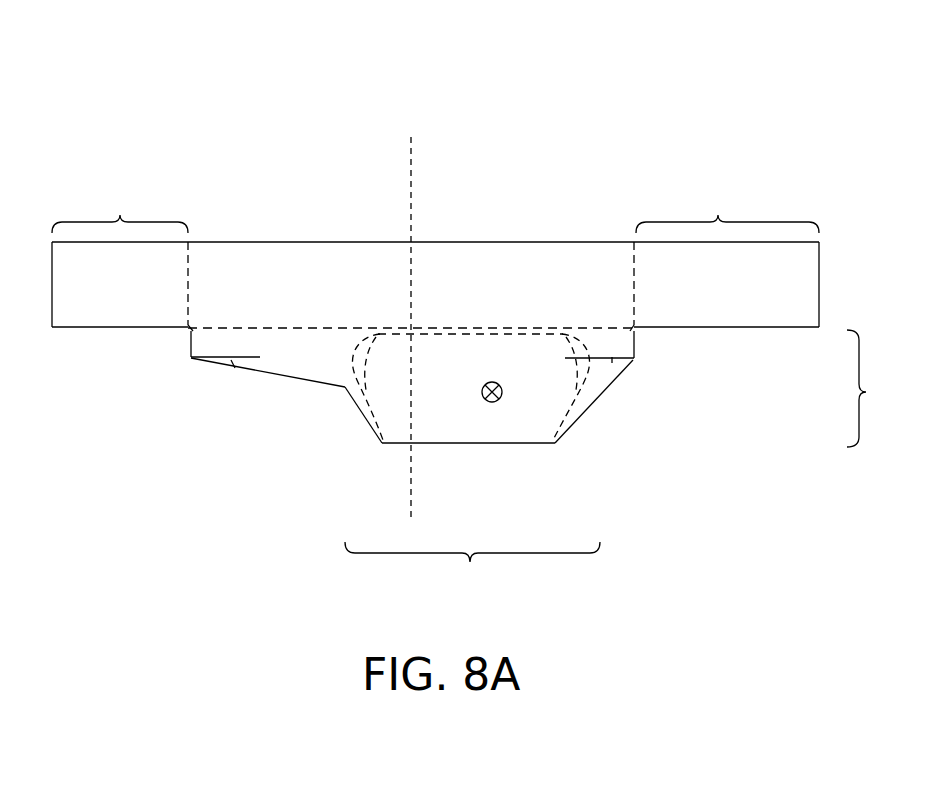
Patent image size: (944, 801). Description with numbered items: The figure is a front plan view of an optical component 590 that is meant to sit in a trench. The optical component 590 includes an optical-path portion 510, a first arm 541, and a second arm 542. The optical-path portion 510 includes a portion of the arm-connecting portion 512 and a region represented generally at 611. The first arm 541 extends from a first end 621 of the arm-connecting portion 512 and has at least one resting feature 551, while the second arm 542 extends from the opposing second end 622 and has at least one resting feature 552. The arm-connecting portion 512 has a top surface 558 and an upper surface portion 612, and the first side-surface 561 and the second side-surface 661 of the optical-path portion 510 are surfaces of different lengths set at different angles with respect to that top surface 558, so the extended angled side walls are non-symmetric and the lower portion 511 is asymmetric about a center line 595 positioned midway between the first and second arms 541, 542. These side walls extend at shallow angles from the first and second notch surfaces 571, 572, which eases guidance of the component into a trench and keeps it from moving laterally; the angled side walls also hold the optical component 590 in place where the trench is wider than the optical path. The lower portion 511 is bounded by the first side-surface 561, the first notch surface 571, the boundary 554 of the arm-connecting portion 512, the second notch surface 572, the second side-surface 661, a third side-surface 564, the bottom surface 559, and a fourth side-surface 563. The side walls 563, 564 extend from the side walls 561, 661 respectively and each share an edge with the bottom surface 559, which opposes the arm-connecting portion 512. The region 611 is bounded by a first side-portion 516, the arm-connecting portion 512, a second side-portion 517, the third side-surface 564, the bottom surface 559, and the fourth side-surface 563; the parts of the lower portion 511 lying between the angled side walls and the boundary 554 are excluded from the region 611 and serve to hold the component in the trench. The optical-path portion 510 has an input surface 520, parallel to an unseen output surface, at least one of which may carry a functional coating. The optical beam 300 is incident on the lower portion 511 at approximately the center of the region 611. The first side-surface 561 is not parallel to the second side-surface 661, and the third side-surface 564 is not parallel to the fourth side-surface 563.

The optical component 590 is at (433, 89).
The center line 595 is at (410, 212).
The first arm 541 is at (120, 260).
The second arm 542 is at (727, 260).
The resting feature 551 is at (82, 327).
The resting feature 552 is at (753, 327).
The arm-connecting portion 512 is at (238, 242).
The upper surface portion 612 is at (475, 262).
The top surface 558 is at (543, 242).
The first end 621 is at (190, 298).
The second end 622 is at (633, 305).
The boundary 554 is at (290, 327).
The first notch surface 571 is at (191, 335).
The second notch surface 572 is at (637, 334).
The first side-surface 561 is at (249, 358).
The second side-surface 661 is at (602, 382).
The fourth side-surface 563 is at (357, 405).
The third side-surface 564 is at (560, 435).
The region 611 is at (415, 443).
The bottom surface 559 is at (530, 444).
The input surface 520 is at (400, 428).
The first side-portion 516 is at (373, 357).
The second side-portion 517 is at (563, 370).
The optical beam 300 is at (502, 389).
The optical-path portion 510 is at (472, 565).
The lower portion 511 is at (874, 388).